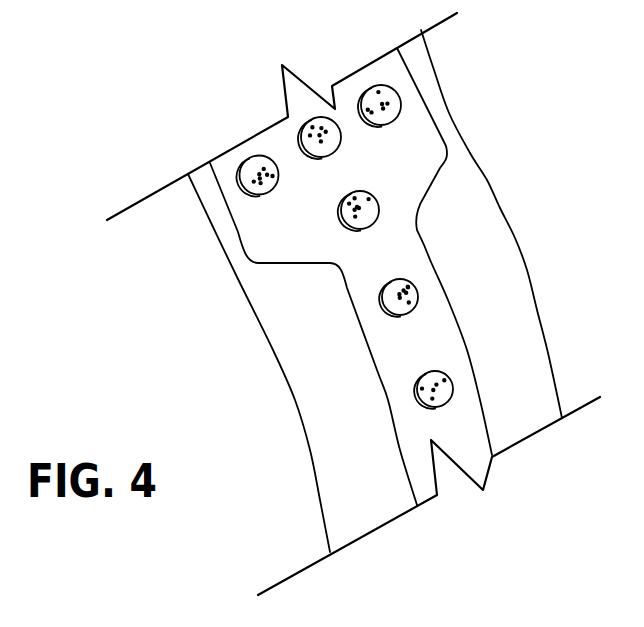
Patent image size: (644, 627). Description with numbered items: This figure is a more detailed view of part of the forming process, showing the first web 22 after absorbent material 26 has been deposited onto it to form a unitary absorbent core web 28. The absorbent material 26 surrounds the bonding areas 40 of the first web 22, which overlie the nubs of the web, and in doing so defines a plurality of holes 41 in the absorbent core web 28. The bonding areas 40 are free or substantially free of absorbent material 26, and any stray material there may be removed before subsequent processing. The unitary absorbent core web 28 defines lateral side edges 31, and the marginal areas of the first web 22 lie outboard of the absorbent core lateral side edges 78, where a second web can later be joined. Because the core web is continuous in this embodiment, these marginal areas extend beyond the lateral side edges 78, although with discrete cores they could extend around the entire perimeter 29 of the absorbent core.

The first web 22 is at (491, 259).
The absorbent material 26 is at (455, 372).
The unitary absorbent core web 28 is at (407, 261).
The perimeter 29 is at (449, 162).
The lateral side edges 31 is at (447, 300).
The bonding areas 40 is at (392, 84).
The holes 41 is at (300, 135).
The absorbent core lateral side edges 78 is at (428, 241).